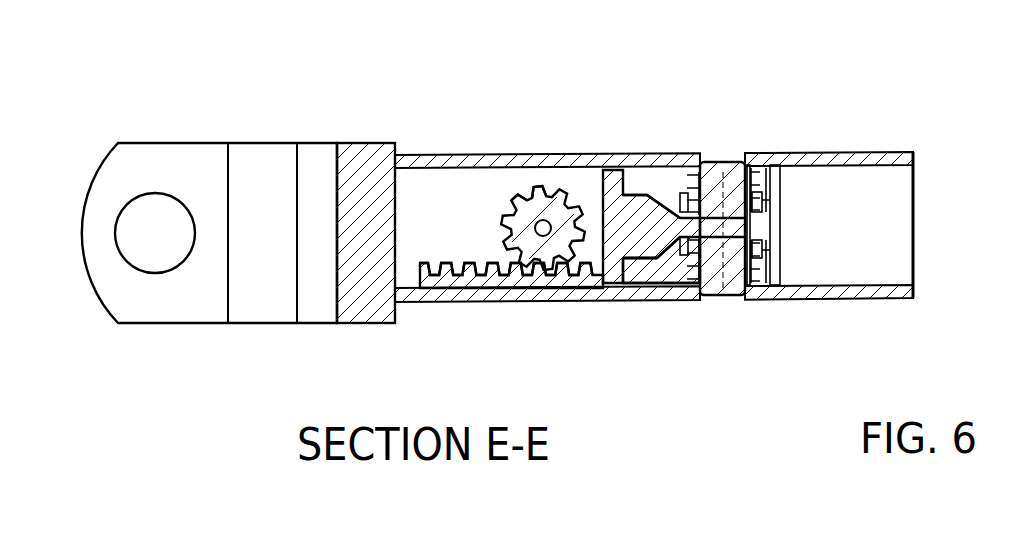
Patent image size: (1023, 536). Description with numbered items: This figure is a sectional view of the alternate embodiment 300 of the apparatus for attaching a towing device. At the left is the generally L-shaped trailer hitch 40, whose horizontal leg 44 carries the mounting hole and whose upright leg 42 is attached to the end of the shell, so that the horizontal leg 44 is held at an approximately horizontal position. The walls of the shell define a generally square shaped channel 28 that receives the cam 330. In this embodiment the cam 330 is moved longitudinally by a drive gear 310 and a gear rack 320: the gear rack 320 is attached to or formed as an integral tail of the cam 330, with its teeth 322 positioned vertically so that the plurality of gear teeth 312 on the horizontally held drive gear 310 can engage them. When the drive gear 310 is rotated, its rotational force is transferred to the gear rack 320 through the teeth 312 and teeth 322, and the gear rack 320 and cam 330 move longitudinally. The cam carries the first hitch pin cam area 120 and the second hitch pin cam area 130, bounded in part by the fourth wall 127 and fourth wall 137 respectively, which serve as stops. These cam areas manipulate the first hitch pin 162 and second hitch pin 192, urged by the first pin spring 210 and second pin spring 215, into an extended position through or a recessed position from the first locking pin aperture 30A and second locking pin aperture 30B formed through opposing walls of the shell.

The alternate embodiment 300 is at (309, 93).
The trailer hitch 40 is at (252, 350).
The horizontal leg 44 is at (192, 325).
The upright leg 42 is at (362, 325).
The channel 28 is at (890, 247).
The gear rack 320 is at (582, 285).
The teeth 322 is at (480, 285).
The drive gear 310 is at (560, 188).
The gear teeth 312 is at (500, 208).
The fourth wall 127 is at (618, 178).
The cam 330 is at (644, 198).
The fourth wall 137 is at (630, 287).
The second hitch pin cam area 130 is at (674, 280).
The first hitch pin cam area 120 is at (679, 180).
The first locking pin aperture 30A is at (735, 160).
The second locking pin aperture 30B is at (713, 298).
The first hitch pin 162 is at (746, 160).
The first pin spring 210 is at (773, 160).
The second pin spring 215 is at (758, 268).
The second hitch pin 192 is at (742, 298).